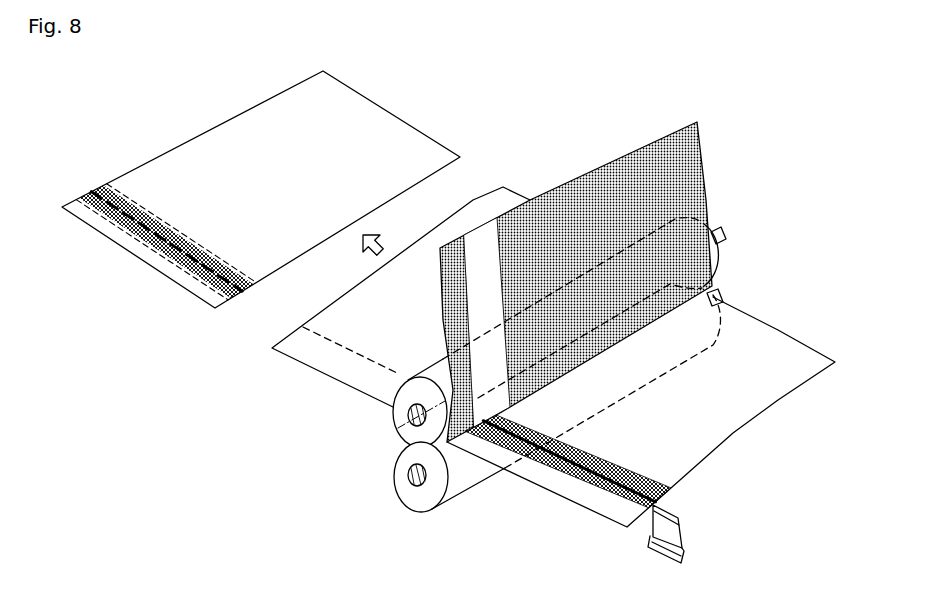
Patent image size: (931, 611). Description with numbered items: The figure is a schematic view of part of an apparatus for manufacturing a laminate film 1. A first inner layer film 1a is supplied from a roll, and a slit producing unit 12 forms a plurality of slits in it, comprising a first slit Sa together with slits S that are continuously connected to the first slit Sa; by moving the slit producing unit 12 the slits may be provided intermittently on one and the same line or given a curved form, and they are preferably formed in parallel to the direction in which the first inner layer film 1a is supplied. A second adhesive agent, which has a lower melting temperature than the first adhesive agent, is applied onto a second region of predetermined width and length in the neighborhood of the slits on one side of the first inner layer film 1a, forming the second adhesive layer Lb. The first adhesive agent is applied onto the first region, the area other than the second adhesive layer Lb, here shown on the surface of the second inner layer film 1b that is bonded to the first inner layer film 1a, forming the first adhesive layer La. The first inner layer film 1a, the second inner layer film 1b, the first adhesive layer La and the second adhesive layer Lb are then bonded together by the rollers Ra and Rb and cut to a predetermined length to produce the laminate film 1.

The laminate film 1 is at (125, 257).
The first inner layer film 1a is at (757, 447).
The second inner layer film 1b is at (573, 163).
The first slit Sa is at (134, 220).
The second adhesive layer Lb is at (162, 225).
The first adhesive layer La is at (502, 285).
The slits S is at (638, 488).
The roller Ra is at (403, 422).
The roller Rb is at (403, 483).
The slit producing unit 12 is at (653, 555).